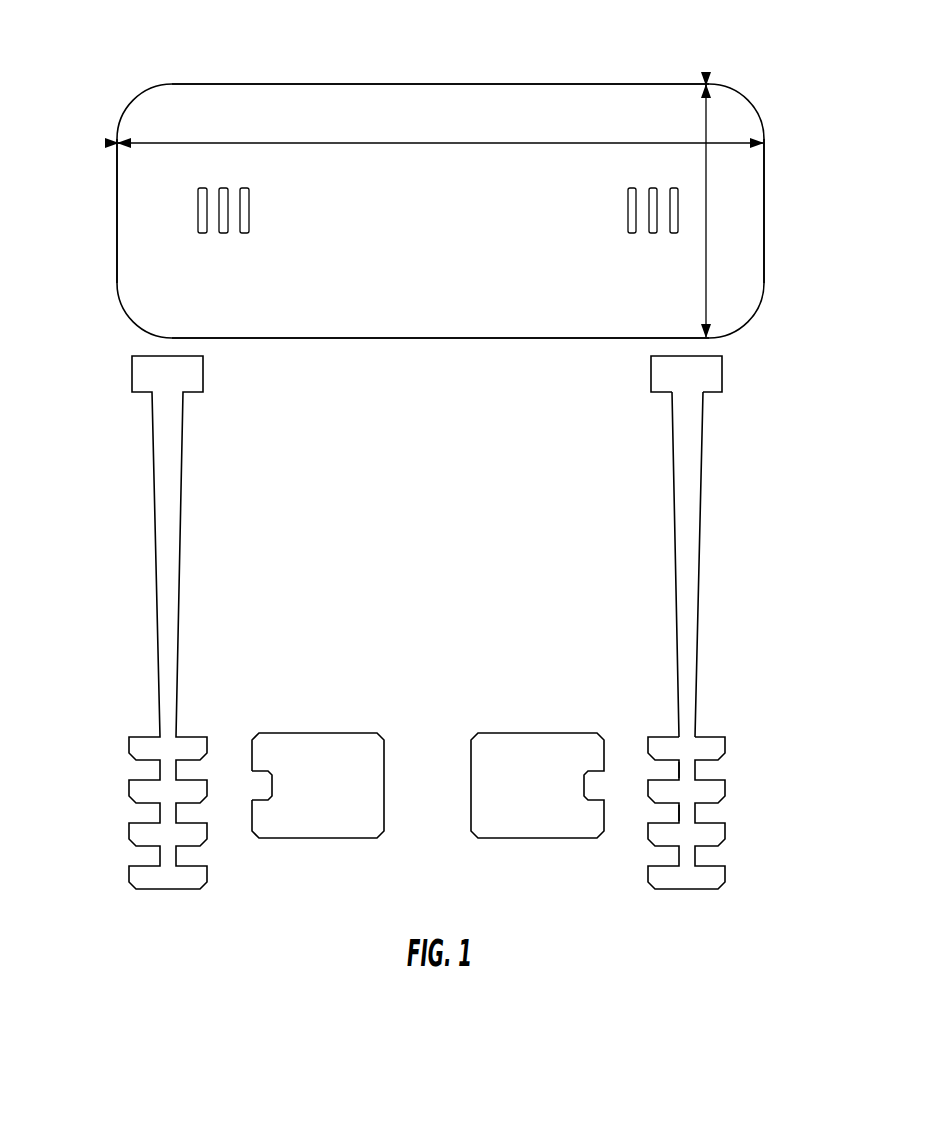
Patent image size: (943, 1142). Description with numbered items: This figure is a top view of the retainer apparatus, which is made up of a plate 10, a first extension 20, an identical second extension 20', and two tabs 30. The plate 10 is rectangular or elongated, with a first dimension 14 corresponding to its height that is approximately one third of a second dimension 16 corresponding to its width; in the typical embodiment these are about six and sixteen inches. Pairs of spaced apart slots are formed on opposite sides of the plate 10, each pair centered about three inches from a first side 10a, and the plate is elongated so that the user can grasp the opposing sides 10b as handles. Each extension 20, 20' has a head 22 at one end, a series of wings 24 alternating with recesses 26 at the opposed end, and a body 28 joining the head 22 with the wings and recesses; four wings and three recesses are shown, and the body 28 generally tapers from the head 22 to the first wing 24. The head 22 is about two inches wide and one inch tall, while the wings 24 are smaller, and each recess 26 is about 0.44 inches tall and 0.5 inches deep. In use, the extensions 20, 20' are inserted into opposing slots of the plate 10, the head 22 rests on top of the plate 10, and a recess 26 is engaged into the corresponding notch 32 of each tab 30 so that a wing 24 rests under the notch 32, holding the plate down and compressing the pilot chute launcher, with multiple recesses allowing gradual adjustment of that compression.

The plate 10 is at (392, 298).
The first side 10a is at (370, 84).
The opposing sides 10b is at (116, 198).
The first dimension 14 is at (707, 252).
The second dimension 16 is at (587, 142).
The first extension 20 is at (658, 622).
The second extension 20' is at (214, 622).
The head 22 is at (702, 372).
The wings 24 is at (710, 877).
The recesses 26 is at (647, 812).
The body 28 is at (684, 573).
The tabs 30 is at (323, 772).
The notch 32 is at (258, 784).